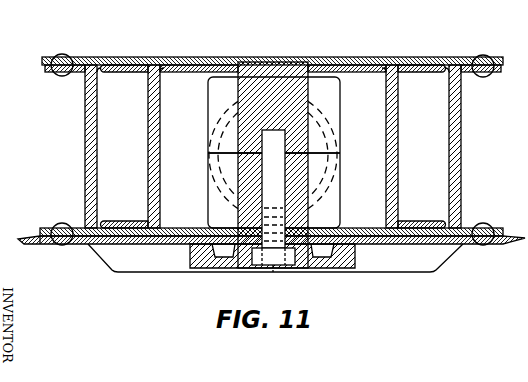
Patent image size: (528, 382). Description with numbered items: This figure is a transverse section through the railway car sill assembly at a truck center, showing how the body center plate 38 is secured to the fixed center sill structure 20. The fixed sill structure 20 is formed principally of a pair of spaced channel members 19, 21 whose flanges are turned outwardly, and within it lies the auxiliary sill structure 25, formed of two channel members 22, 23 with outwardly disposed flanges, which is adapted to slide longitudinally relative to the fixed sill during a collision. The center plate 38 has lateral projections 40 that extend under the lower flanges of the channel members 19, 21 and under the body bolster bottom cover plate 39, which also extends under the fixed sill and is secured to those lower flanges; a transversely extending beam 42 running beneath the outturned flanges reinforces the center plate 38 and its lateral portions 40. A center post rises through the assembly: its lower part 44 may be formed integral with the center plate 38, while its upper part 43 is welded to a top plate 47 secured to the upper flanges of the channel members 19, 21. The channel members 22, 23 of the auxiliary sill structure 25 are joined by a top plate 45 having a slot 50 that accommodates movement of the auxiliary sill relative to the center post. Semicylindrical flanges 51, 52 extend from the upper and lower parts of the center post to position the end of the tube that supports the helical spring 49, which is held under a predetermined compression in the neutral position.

The channel member 19 is at (461, 185).
The center sill structure 20 is at (463, 128).
The channel member 21 is at (85, 160).
The channel member 22 is at (398, 185).
The channel member 23 is at (148, 160).
The auxiliary sill structure 25 is at (400, 128).
The body center plate 38 is at (310, 268).
The body bolster bottom cover plate 39 is at (363, 229).
The lateral projections 40 is at (133, 244).
The transversely extending beam 42 is at (371, 273).
The upper part of center post 43 is at (320, 93).
The lower part of center post 44 is at (305, 216).
The top plate 45 is at (186, 70).
The top plate 47 is at (163, 58).
The spring 49 is at (336, 110).
The slot 50 is at (235, 74).
The semicylindrical flange 51 is at (338, 137).
The semicylindrical flange 52 is at (338, 177).